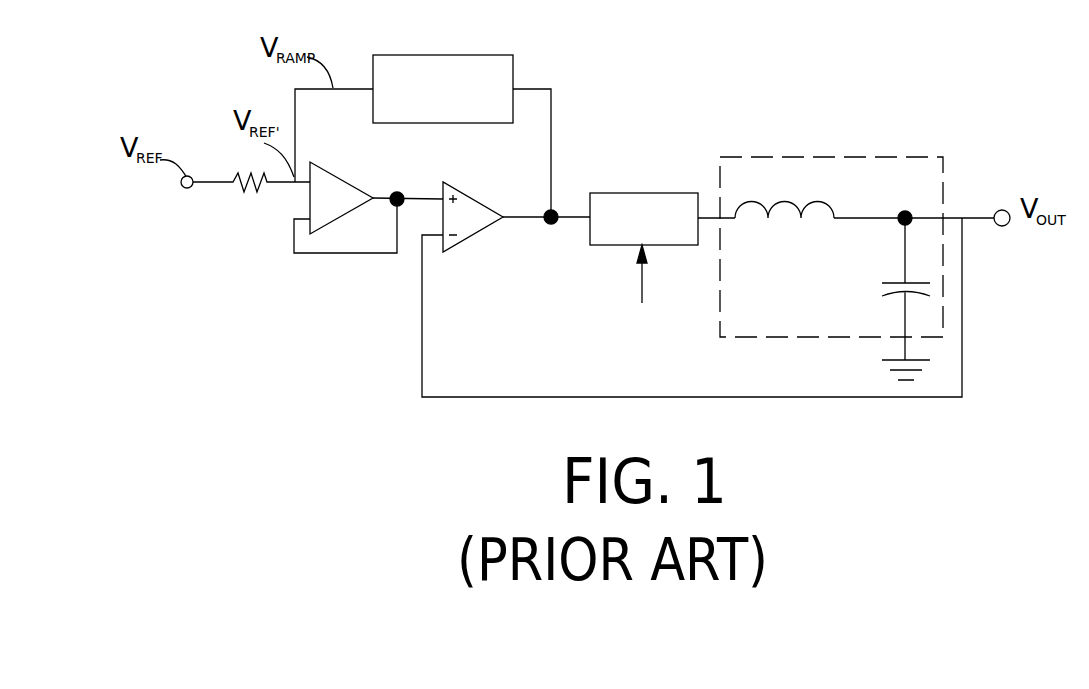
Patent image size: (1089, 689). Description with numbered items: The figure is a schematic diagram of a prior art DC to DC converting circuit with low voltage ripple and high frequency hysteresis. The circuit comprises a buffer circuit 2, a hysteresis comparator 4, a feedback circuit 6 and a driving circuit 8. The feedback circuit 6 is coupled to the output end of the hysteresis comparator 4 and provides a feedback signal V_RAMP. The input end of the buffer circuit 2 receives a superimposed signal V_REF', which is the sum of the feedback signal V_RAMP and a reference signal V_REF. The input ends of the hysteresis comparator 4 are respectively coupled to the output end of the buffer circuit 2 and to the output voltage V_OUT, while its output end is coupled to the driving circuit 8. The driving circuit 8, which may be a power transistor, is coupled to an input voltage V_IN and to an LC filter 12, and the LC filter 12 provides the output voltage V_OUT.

The buffer circuit 2 is at (310, 197).
The hysteresis comparator 4 is at (473, 234).
The feedback circuit 6 is at (467, 55).
The driving circuit 8 is at (652, 193).
The LC filter 12 is at (888, 157).